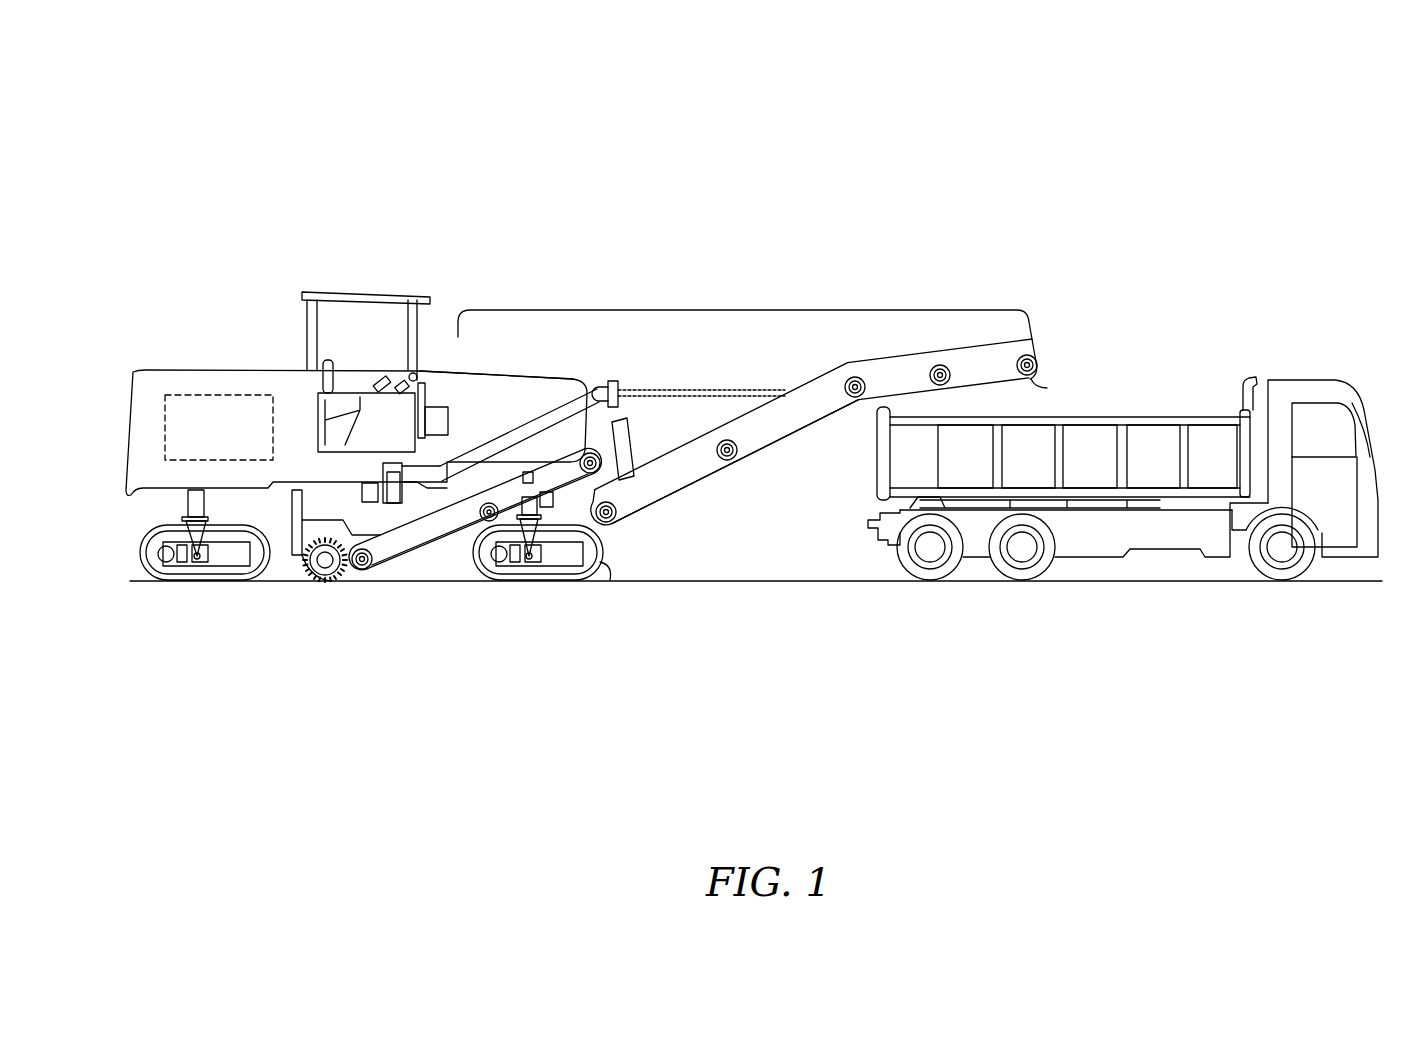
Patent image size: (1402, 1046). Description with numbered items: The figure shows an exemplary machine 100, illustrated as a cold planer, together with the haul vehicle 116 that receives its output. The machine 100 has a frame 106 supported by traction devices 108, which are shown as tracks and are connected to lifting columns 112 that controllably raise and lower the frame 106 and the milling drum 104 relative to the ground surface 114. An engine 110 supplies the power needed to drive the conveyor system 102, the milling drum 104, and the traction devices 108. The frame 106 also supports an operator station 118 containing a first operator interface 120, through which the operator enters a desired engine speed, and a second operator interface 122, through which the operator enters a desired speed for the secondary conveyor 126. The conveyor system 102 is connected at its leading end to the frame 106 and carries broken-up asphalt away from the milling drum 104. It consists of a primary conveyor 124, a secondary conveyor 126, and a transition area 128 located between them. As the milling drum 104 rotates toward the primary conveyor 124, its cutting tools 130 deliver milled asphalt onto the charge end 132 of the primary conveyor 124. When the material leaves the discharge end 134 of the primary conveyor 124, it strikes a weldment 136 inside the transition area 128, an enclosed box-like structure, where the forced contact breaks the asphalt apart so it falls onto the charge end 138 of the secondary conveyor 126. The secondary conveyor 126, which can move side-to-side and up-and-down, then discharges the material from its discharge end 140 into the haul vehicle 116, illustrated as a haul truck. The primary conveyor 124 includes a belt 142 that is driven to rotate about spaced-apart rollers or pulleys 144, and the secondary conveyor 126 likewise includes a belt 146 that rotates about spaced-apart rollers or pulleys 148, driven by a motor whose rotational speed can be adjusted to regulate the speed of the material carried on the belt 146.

The machine 100 is at (213, 120).
The conveyor system 102 is at (760, 310).
The milling drum 104 is at (359, 592).
The frame 106 is at (440, 389).
The traction devices 108 is at (265, 583).
The engine 110 is at (180, 376).
The lifting columns 112 is at (186, 525).
The ground surface 114 is at (796, 579).
The haul vehicle 116 is at (1158, 379).
The operator station 118 is at (289, 282).
The first operator interface 120 is at (375, 385).
The second operator interface 122 is at (389, 385).
The primary conveyor 124 is at (423, 565).
The secondary conveyor 126 is at (684, 507).
The transition area 128 is at (665, 398).
The cutting tools 130 is at (313, 576).
The charge end 132 is at (380, 581).
The discharge end 134 is at (591, 428).
The weldment 136 is at (637, 433).
The charge end 138 is at (628, 536).
The discharge end 140 is at (1054, 352).
The belt 142 is at (452, 538).
The rollers or pulleys 144 is at (553, 467).
The belt 146 is at (790, 437).
The rollers or pulleys 148 is at (1050, 388).